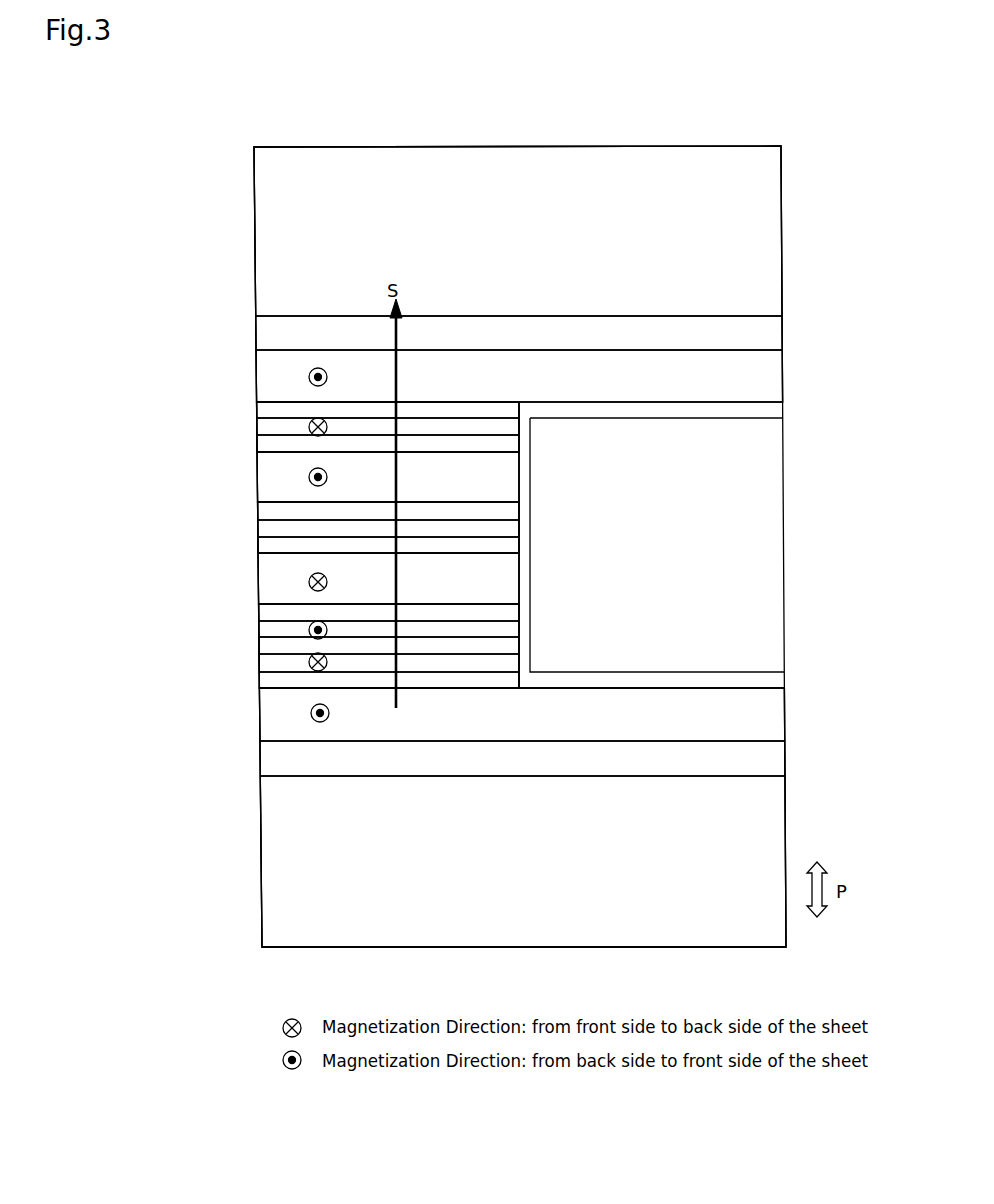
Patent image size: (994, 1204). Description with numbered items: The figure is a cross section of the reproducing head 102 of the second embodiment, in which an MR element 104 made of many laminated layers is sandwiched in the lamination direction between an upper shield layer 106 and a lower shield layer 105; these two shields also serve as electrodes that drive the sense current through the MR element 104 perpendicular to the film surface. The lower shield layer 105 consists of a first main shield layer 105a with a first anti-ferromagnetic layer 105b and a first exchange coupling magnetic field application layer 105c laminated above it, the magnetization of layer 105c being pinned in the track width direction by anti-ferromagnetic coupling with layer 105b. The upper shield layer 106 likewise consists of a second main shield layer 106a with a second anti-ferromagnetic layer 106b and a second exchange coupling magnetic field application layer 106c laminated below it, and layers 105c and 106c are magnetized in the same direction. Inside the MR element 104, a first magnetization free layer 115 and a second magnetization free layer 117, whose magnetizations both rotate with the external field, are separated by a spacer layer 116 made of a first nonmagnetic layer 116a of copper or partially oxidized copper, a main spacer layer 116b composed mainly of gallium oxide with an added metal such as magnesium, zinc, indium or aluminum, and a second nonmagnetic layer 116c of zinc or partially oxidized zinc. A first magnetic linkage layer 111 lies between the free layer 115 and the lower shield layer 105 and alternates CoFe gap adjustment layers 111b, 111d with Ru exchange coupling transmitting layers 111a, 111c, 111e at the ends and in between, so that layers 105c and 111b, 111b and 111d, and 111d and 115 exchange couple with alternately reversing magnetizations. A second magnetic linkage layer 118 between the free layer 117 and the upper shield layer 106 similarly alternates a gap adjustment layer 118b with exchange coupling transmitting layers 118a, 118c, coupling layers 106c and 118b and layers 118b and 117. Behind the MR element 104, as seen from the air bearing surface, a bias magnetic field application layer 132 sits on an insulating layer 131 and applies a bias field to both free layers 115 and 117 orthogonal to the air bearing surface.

The reproducing head 102 is at (480, 138).
The MR element 104 is at (106, 423).
The lower shield layer 105 is at (166, 713).
The first main shield layer 105a is at (261, 857).
The first anti-ferromagnetic layer 105b is at (260, 757).
The first exchange coupling magnetic field application layer 105c is at (260, 714).
The upper shield layer 106 is at (158, 228).
The second main shield layer 106a is at (255, 240).
The second anti-ferromagnetic layer 106b is at (256, 336).
The second exchange coupling magnetic field application layer 106c is at (256, 381).
The first magnetic linkage layer 111 is at (166, 612).
The exchange coupling transmitting layer 111a is at (259, 682).
The gap adjustment layer 111b is at (259, 665).
The exchange coupling transmitting layer 111c is at (259, 647).
The gap adjustment layer 111d is at (259, 630).
The exchange coupling transmitting layer 111e is at (259, 613).
The first magnetization free layer 115 is at (258, 580).
The spacer layer 116 is at (163, 507).
The first nonmagnetic layer 116a is at (258, 547).
The main spacer layer 116b is at (258, 530).
The second nonmagnetic layer 116c is at (258, 513).
The second magnetization free layer 117 is at (258, 480).
The second magnetic linkage layer 118 is at (163, 405).
The exchange coupling transmitting layer 118a is at (257, 448).
The gap adjustment layer 118b is at (257, 430).
The exchange coupling transmitting layer 118c is at (257, 413).
The insulating layer 131 is at (773, 680).
The bias magnetic field application layer 132 is at (783, 530).